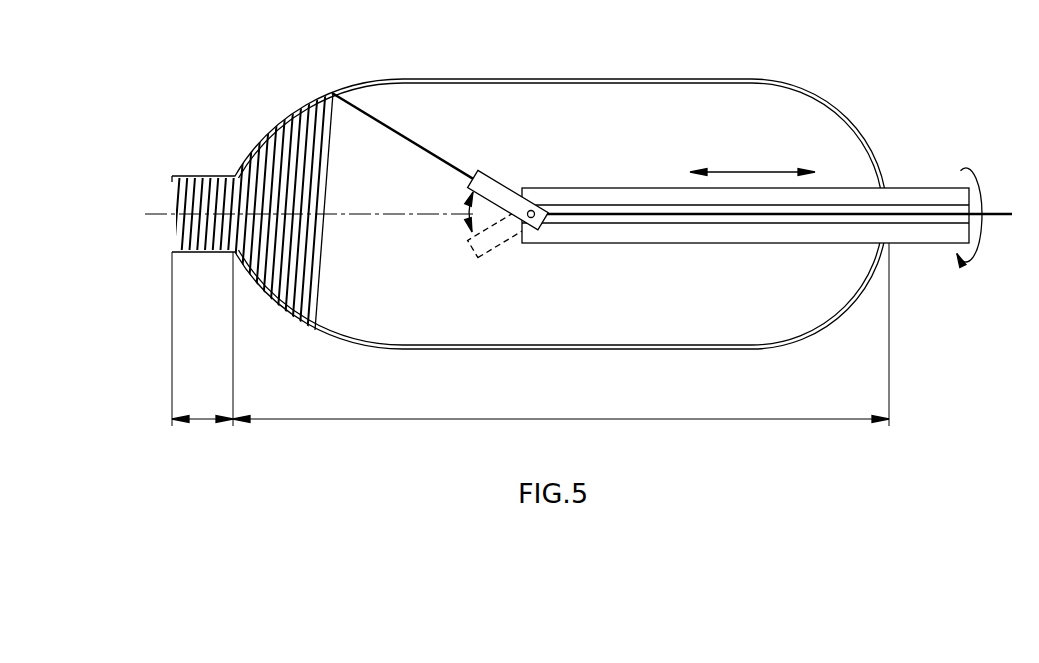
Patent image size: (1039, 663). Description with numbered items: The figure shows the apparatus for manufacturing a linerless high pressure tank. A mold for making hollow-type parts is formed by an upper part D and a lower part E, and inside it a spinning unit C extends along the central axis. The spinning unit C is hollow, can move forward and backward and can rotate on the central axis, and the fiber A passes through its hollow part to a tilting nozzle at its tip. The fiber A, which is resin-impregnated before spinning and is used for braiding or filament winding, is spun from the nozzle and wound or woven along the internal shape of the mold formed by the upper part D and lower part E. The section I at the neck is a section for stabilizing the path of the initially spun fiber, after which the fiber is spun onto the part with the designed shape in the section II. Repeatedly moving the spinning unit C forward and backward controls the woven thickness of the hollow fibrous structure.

The fiber A is at (431, 153).
The spinning unit C is at (767, 213).
The upper part of the mold D is at (577, 62).
The lower part of the mold E is at (577, 365).
The section for stabilizing path of the initially spinning fiber I is at (202, 339).
The section for spinning to a part with designed shape II is at (561, 334).